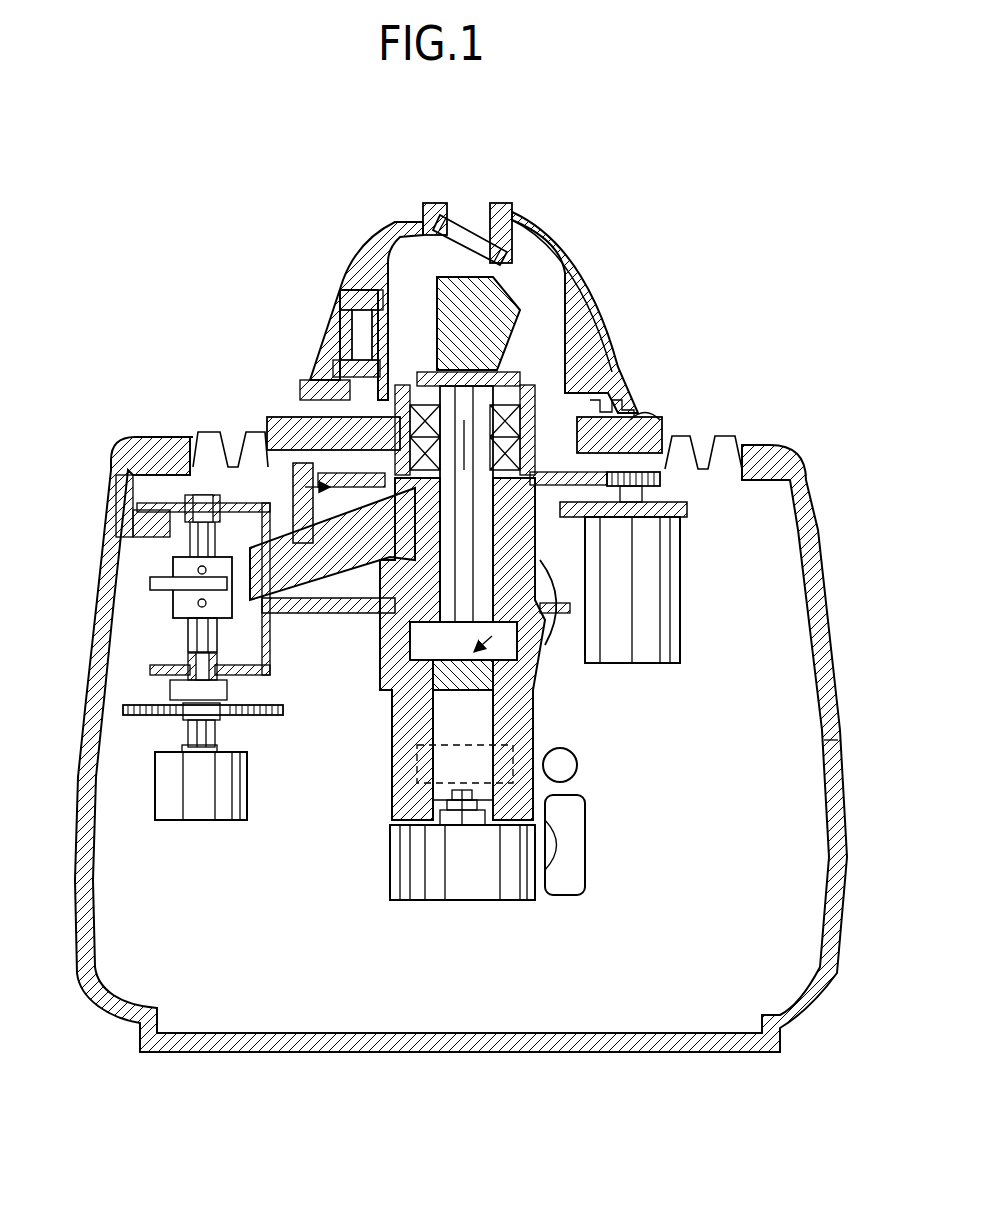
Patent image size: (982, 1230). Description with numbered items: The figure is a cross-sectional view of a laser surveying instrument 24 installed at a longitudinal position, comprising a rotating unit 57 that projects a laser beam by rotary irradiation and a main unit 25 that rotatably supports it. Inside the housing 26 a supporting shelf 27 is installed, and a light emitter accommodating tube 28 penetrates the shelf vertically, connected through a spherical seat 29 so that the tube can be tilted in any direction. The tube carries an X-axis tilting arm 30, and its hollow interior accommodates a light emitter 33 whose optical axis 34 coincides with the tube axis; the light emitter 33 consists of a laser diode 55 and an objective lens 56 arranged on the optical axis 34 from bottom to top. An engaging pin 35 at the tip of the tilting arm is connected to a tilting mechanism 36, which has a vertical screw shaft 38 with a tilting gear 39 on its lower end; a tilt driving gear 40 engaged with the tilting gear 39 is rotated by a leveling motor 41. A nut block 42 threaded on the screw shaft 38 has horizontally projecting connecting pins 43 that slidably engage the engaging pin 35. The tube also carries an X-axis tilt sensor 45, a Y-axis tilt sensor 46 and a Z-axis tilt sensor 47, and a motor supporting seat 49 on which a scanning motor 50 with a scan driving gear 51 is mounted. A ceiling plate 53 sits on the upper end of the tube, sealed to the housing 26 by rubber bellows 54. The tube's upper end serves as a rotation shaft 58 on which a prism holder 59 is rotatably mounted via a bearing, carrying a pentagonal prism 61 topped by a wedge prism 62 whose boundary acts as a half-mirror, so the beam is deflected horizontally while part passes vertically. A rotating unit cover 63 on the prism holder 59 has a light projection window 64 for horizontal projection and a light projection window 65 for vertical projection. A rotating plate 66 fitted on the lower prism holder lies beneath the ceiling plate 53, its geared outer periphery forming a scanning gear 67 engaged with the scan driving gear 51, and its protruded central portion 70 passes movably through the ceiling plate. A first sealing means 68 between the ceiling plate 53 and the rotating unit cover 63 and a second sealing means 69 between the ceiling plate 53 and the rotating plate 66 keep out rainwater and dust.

The laser surveying instrument 24 is at (190, 226).
The main unit 25 is at (822, 528).
The housing 26 is at (832, 625).
The supporting shelf 27 is at (310, 613).
The light emitter accommodating tube 28 is at (535, 712).
The spherical seat 29 is at (527, 615).
The X-axis tilting arm 30 is at (340, 582).
The light emitter 33 is at (560, 603).
The optical axis 34 is at (392, 692).
The engaging pin 35 is at (147, 574).
The tilting mechanism 36 is at (132, 705).
The screw shaft 38 is at (190, 638).
The tilting gear 39 is at (283, 713).
The tilt driving gear 40 is at (180, 755).
The leveling motor 41 is at (250, 822).
The nut block 42 is at (173, 597).
The connecting pins 43 is at (205, 568).
The X-axis tilt sensor 45 is at (512, 895).
The Y-axis tilt sensor 46 is at (578, 767).
The Z-axis tilt sensor 47 is at (586, 882).
The motor supporting seat 49 is at (687, 512).
The scanning motor 50 is at (680, 597).
The scan driving gear 51 is at (660, 482).
The ceiling plate 53 is at (295, 417).
The bellows 54 is at (705, 440).
The laser diode 55 is at (400, 862).
The objective lens 56 is at (450, 770).
The rotating unit 57 is at (481, 265).
The rotation shaft 58 is at (520, 385).
The prism holder 59 is at (418, 384).
The pentagonal prism 61 is at (508, 262).
The wedge prism 62 is at (423, 218).
The rotating unit cover 63 is at (592, 312).
The light projection window 64 is at (345, 335).
The light projection window 65 is at (478, 225).
The rotating plate 66 is at (386, 497).
The scanning gear 67 is at (622, 455).
The first sealing means 68 is at (619, 383).
The second sealing means 69 is at (215, 432).
The central portion 70 is at (360, 345).